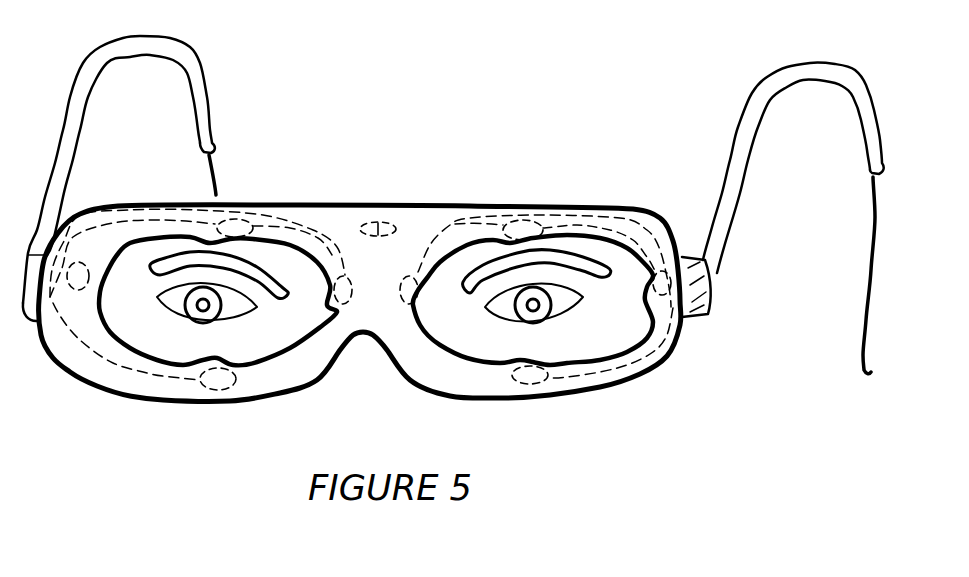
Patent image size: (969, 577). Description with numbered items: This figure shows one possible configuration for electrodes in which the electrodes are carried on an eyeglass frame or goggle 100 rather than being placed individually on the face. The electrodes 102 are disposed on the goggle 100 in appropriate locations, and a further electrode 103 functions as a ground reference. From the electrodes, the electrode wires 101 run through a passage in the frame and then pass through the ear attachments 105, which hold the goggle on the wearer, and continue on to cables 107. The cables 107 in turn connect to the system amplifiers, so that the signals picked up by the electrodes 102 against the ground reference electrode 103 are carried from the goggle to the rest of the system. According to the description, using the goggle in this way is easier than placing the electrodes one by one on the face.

The eyeglass frame or goggle 100 is at (313, 203).
The electrode wires 101 is at (638, 237).
The electrodes 102 is at (520, 228).
The electrode 103 is at (392, 222).
The ear attachments 105 is at (208, 85).
The cables 107 is at (863, 240).